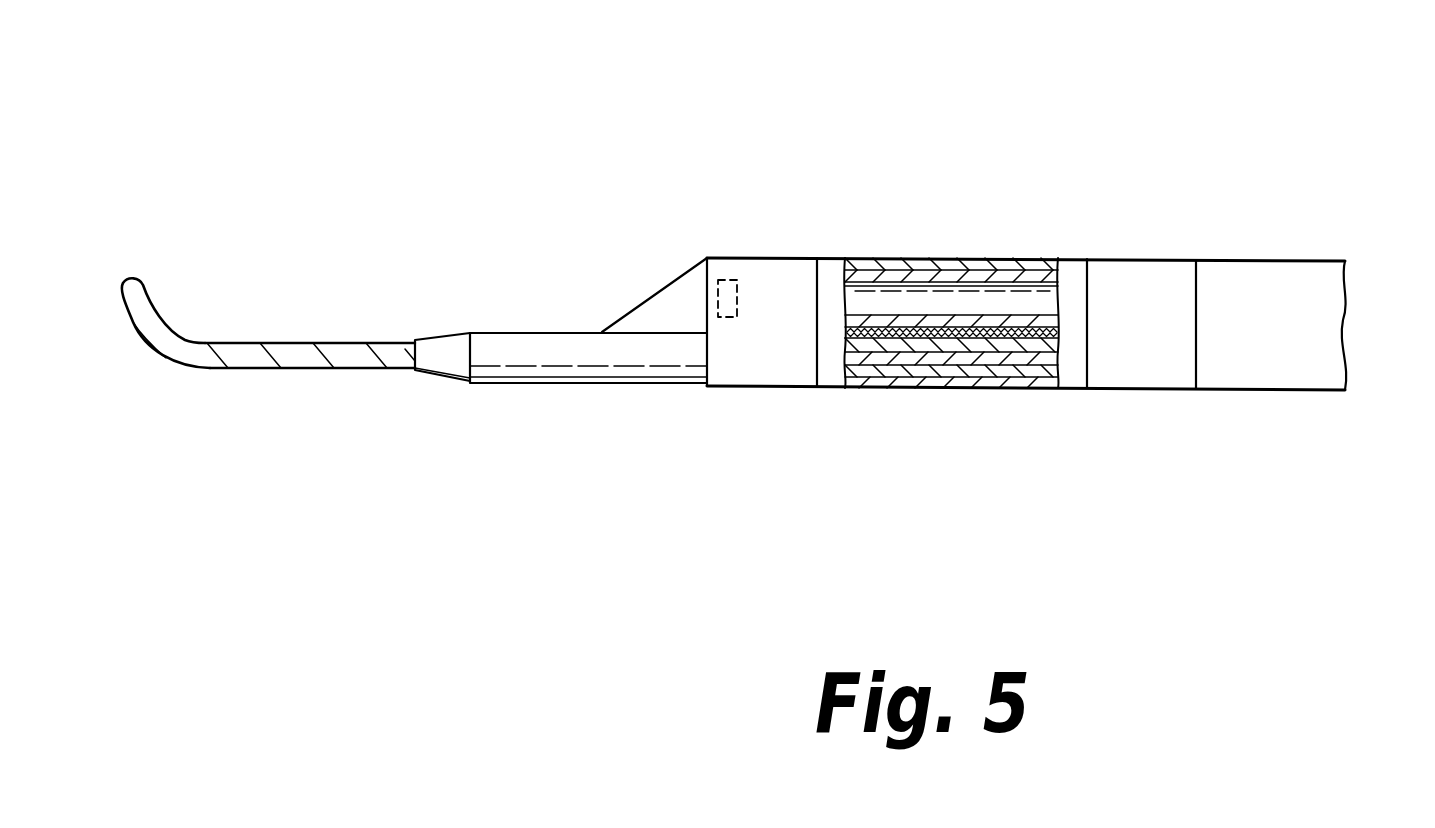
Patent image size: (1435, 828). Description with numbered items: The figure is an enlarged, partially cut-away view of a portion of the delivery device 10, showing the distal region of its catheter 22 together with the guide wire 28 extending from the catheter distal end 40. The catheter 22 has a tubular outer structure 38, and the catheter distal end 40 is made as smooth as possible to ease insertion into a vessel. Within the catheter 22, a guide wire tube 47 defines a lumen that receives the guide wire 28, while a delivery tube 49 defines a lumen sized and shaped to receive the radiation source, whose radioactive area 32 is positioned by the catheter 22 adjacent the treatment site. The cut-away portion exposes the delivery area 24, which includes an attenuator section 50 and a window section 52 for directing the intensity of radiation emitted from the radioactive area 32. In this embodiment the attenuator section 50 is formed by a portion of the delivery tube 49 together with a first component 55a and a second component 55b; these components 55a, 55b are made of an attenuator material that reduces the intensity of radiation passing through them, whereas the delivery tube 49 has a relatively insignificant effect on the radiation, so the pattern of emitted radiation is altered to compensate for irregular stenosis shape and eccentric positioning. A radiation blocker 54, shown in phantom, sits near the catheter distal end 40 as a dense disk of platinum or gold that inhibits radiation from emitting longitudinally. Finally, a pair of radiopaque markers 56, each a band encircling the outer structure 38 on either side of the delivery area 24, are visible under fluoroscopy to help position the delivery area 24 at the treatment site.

The delivery device 10 is at (1295, 148).
The catheter 22 is at (1317, 256).
The delivery area 24 is at (1029, 392).
The guide wire 28 is at (340, 358).
The radioactive area 32 is at (917, 300).
The tubular outer structure 38 is at (980, 267).
The catheter distal end 40 is at (445, 362).
The guide wire tube 47 is at (940, 435).
The delivery tube 49 is at (866, 262).
The attenuator section 50 is at (935, 389).
The window section 52 is at (990, 259).
The radiation blocker 54 is at (730, 268).
The first component 55a is at (1045, 323).
The second component 55b is at (1050, 335).
The markers 56 is at (752, 370).